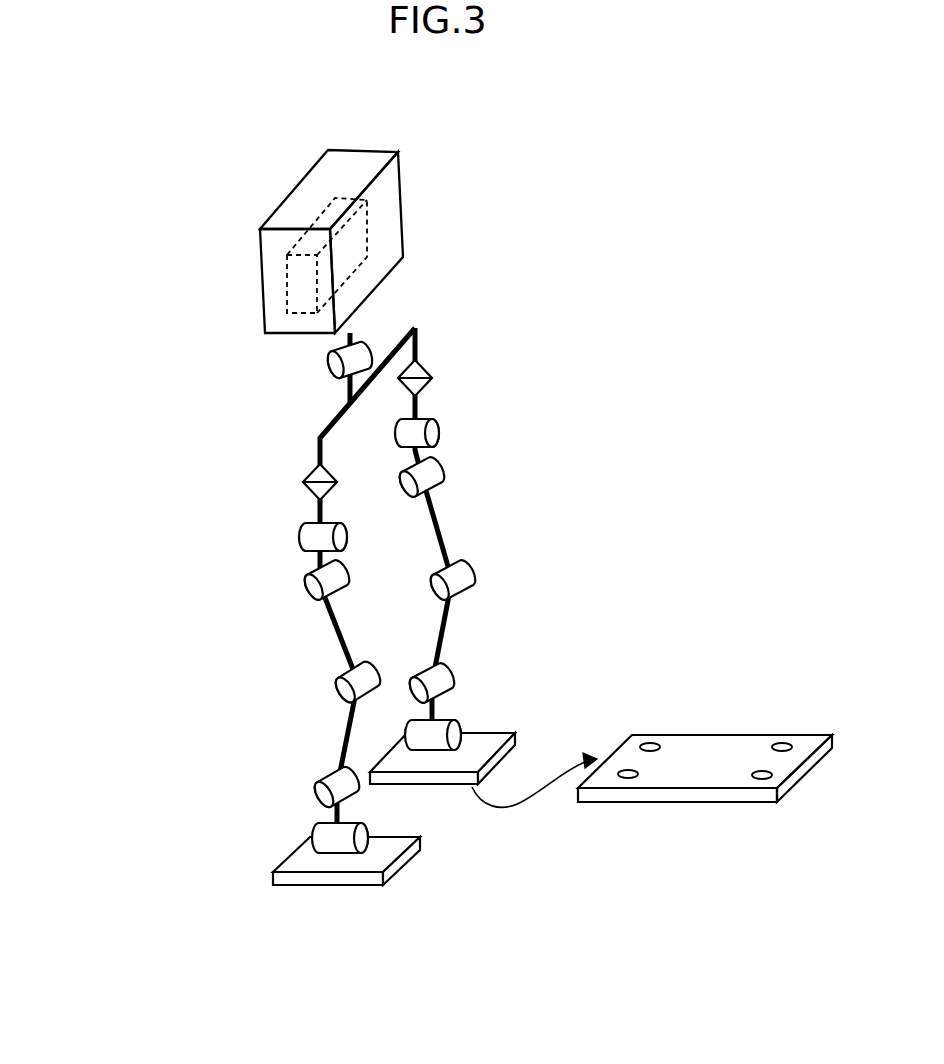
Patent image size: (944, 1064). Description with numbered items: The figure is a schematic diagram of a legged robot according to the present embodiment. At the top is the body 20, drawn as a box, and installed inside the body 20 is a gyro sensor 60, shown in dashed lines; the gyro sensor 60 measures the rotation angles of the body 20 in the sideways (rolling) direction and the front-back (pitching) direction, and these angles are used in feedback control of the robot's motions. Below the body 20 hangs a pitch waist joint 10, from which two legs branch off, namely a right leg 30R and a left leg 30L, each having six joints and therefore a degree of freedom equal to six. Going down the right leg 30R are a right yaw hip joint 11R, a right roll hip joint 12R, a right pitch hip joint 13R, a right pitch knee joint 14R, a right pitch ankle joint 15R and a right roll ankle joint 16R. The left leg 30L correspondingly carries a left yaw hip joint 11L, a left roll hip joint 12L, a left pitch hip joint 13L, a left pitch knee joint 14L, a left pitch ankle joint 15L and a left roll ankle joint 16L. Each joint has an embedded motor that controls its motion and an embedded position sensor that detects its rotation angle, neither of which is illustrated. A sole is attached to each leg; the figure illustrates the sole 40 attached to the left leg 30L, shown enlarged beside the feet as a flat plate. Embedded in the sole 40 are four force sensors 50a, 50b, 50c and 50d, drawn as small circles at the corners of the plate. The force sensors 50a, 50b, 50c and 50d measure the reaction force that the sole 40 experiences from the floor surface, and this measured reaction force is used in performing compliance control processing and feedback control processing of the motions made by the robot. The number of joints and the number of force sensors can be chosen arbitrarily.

The body 20 is at (365, 167).
The gyro sensor 60 is at (365, 213).
The pitch waist joint 10 is at (362, 355).
The left yaw hip joint 11L is at (432, 368).
The left roll hip joint 12L is at (433, 432).
The left pitch hip joint 13L is at (430, 473).
The left pitch knee joint 14L is at (460, 575).
The left pitch ankle joint 15L is at (440, 680).
The left roll ankle joint 16L is at (594, 683).
The right yaw hip joint 11R is at (310, 478).
The right roll hip joint 12R is at (312, 535).
The right pitch hip joint 13R is at (313, 590).
The right pitch knee joint 14R is at (342, 688).
The right pitch ankle joint 15R is at (322, 792).
The right roll ankle joint 16R is at (195, 820).
The right leg 30R is at (220, 678).
The left leg 30L is at (578, 628).
The sole 40 is at (757, 733).
The force sensor 50a is at (647, 752).
The force sensor 50b is at (628, 778).
The force sensor 50c is at (782, 752).
The force sensor 50d is at (760, 780).